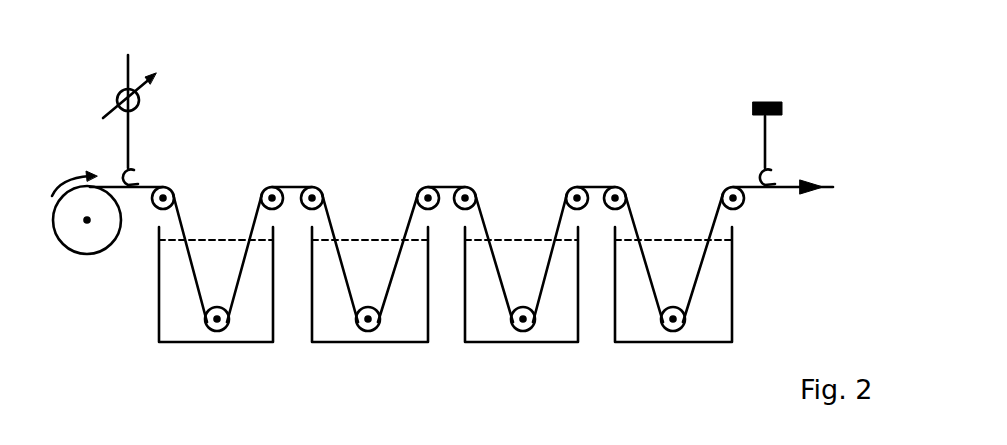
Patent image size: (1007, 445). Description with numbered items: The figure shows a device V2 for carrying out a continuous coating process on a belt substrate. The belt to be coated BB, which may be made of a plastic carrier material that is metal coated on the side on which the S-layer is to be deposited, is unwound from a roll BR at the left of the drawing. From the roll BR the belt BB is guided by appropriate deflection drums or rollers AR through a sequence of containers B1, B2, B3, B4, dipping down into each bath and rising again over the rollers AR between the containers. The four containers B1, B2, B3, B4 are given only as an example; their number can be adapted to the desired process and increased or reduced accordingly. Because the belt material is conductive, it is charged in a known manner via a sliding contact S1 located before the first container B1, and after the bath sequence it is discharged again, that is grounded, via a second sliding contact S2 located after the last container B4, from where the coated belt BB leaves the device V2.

The roll BR is at (84, 226).
The sliding contact S1 is at (129, 120).
The belt to be coated BB is at (190, 268).
The deflection drums or rollers AR is at (175, 189).
The container B1 is at (198, 335).
The container B2 is at (350, 335).
The container B3 is at (503, 335).
The container B4 is at (653, 335).
The sliding contact S2 is at (777, 150).
The device V2 is at (727, 62).